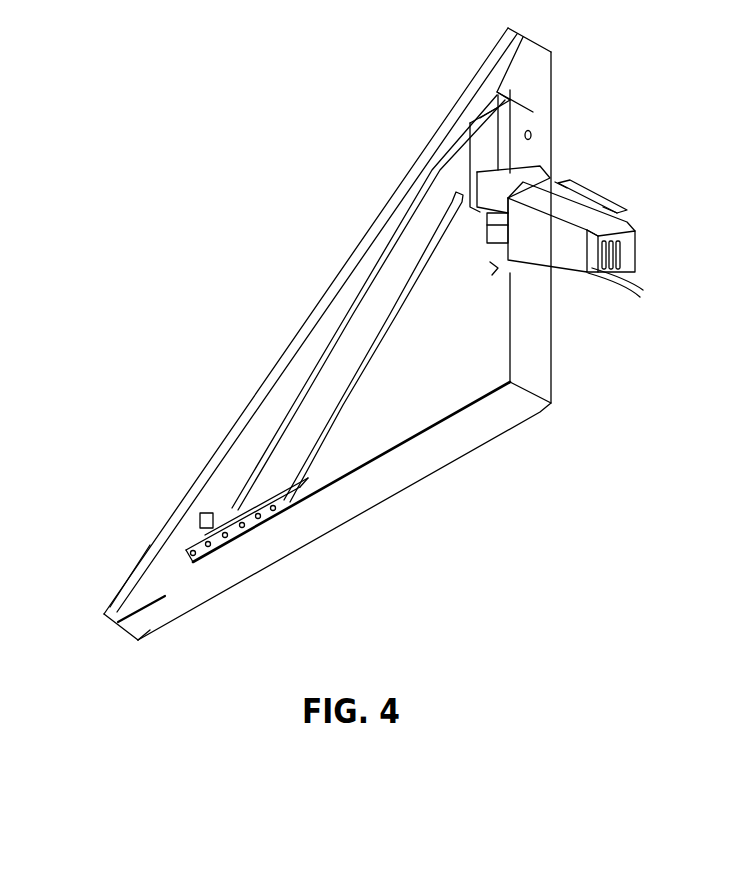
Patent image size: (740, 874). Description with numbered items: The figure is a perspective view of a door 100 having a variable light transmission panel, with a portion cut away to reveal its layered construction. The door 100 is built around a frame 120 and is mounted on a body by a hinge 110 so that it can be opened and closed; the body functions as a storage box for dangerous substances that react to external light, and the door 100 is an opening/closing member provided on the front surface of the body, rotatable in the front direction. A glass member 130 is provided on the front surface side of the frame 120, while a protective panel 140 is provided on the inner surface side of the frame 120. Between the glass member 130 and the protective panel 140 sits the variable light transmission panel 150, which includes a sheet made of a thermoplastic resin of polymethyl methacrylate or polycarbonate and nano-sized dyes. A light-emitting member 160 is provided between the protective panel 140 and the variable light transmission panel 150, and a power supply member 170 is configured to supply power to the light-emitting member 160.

The door 100 is at (302, 33).
The hinge 110 is at (577, 205).
The frame 120 is at (380, 484).
The glass member 130 is at (268, 415).
The protective panel 140 is at (417, 390).
The variable light transmission panel 150 is at (375, 305).
The light-emitting member 160 is at (172, 535).
The power supply member 170 is at (565, 248).